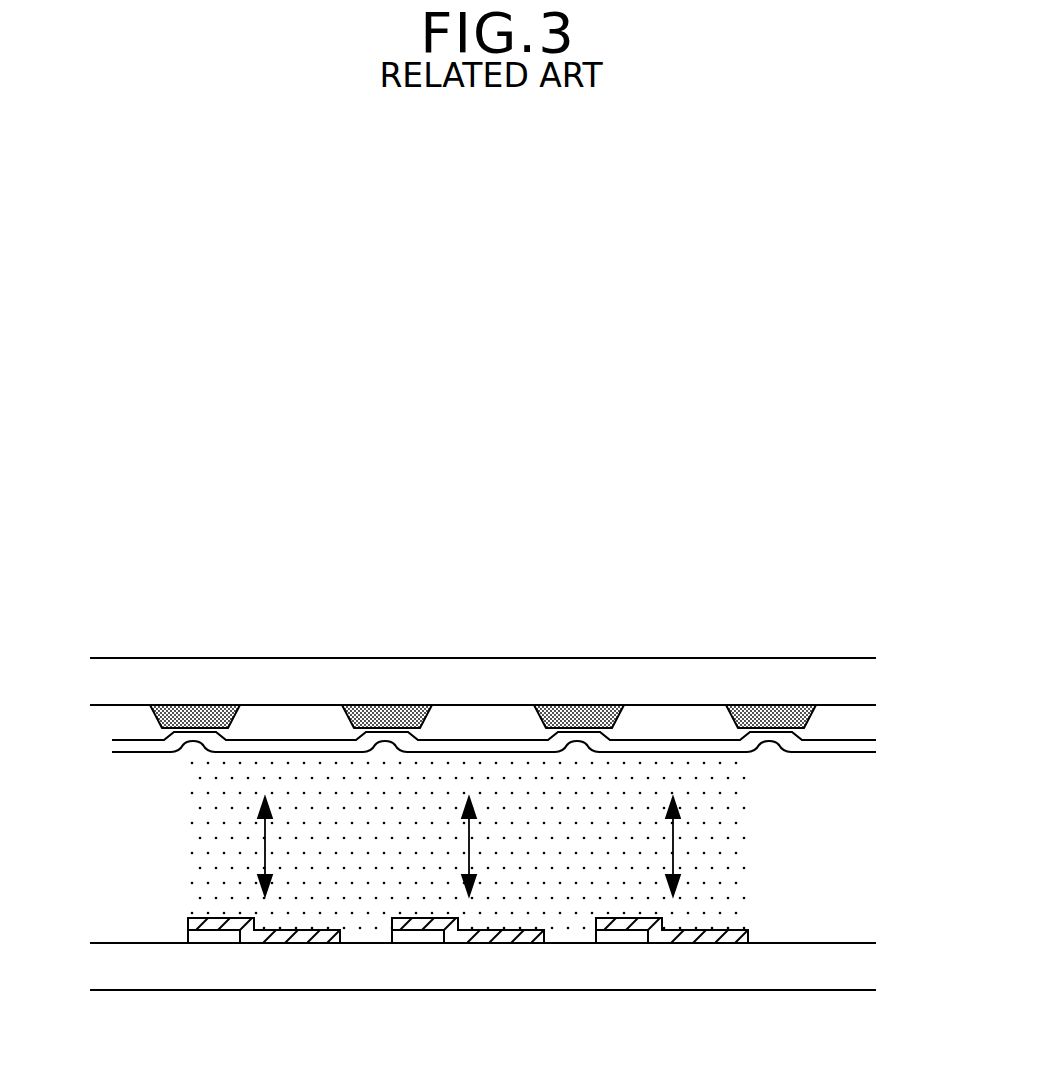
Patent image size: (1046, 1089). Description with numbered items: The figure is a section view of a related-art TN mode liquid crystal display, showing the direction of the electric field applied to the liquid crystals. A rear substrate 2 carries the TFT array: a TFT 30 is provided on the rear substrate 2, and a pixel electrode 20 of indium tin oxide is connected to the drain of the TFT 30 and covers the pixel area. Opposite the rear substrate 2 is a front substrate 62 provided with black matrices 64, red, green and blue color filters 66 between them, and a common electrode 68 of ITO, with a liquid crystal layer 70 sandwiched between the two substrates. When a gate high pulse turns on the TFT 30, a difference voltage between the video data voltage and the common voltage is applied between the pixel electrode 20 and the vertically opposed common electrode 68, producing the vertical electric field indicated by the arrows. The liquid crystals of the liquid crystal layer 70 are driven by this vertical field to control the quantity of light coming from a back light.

The rear substrate 2 is at (452, 983).
The pixel electrode 20 is at (300, 930).
The TFT 30 is at (212, 933).
The front substrate 62 is at (697, 662).
The black matrices 64 is at (587, 710).
The color filters 66 is at (465, 715).
The common electrode 68 is at (312, 745).
The liquid crystal layer 70 is at (862, 843).